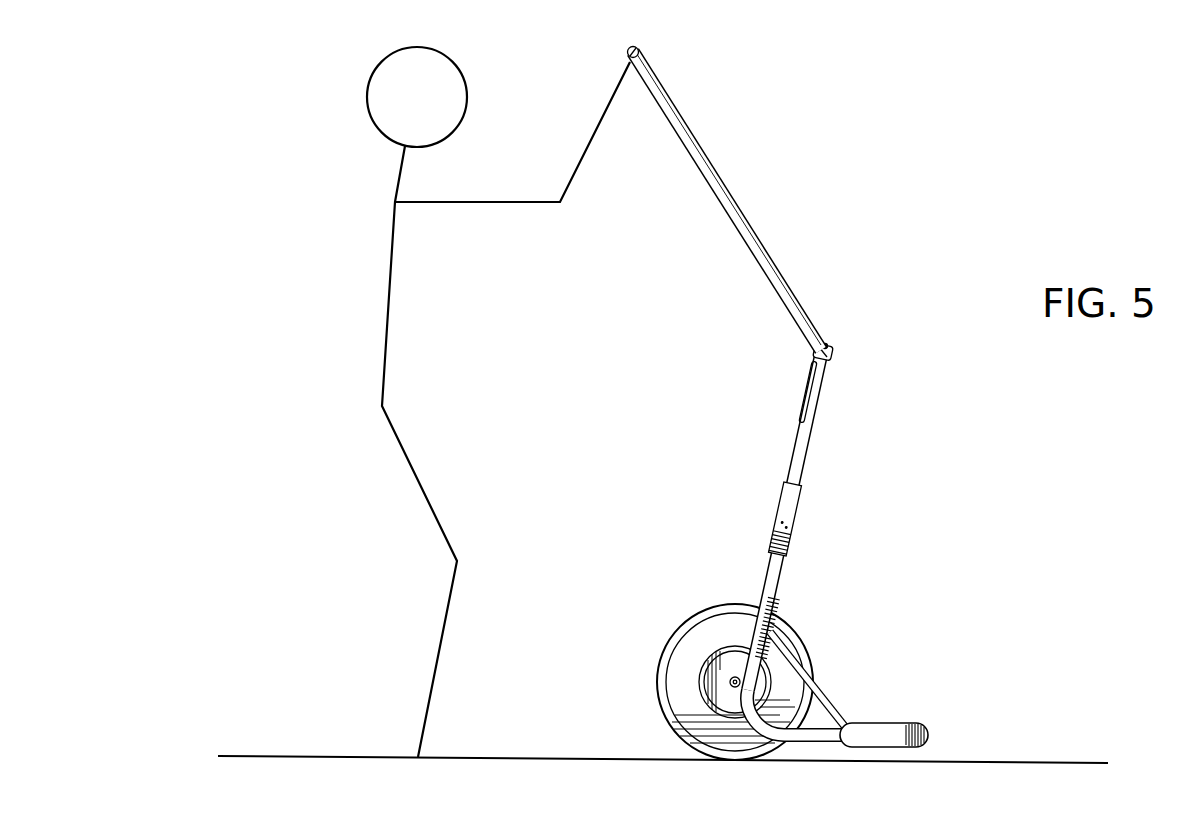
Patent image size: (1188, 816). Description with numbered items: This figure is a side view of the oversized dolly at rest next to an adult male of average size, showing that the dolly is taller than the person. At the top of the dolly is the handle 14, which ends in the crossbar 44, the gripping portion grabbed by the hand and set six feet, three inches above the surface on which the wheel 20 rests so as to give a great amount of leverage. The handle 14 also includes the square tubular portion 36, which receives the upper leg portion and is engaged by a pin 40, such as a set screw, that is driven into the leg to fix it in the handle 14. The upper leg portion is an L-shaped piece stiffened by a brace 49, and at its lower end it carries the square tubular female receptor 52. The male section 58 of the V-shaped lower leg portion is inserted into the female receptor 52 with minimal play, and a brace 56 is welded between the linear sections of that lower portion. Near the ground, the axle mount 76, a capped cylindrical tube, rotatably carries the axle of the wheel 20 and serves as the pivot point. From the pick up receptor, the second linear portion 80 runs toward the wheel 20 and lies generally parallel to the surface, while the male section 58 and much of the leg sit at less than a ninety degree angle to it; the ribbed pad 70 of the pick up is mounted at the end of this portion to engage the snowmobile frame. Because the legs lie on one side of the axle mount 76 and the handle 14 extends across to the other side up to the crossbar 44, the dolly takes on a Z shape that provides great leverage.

The handle 14 is at (746, 217).
The wheel 20 is at (668, 638).
The square tubular portion 36 is at (833, 352).
The pin 40 is at (828, 344).
The crossbar 44 is at (628, 47).
The brace 49 is at (805, 400).
The female receptor 52 is at (777, 506).
The brace 56 is at (833, 700).
The male section 58 is at (787, 568).
The ribbed pad 70 is at (885, 726).
The axle mount 76 is at (729, 684).
The second linear portion 80 is at (818, 748).